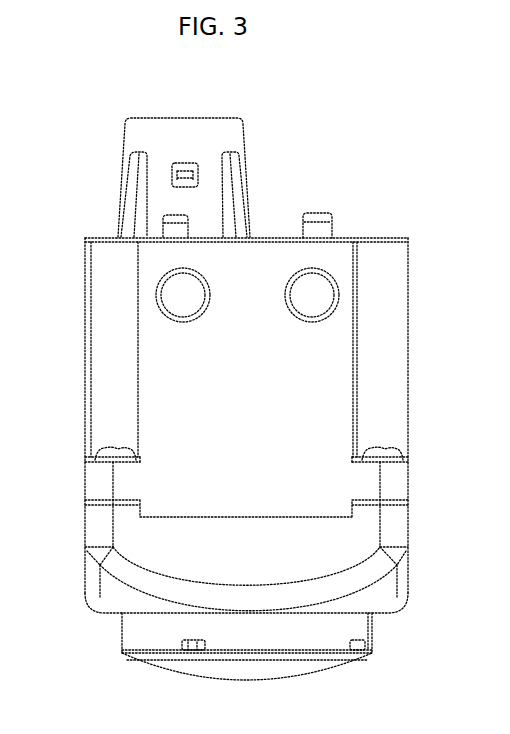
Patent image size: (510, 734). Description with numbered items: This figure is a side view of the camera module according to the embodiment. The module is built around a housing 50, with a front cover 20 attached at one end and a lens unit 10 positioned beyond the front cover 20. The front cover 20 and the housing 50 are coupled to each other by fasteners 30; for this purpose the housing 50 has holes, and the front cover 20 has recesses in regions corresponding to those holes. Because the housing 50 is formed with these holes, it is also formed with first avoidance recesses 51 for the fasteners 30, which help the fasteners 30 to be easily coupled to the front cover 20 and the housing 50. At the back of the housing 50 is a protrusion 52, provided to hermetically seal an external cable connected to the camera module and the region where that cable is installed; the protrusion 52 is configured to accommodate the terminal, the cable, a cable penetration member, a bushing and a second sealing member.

The lens unit 10 is at (370, 632).
The front cover 20 is at (393, 530).
The fasteners 30 is at (107, 450).
The housing 50 is at (276, 251).
The first avoidance recesses 51 is at (118, 380).
The protrusion 52 is at (181, 123).